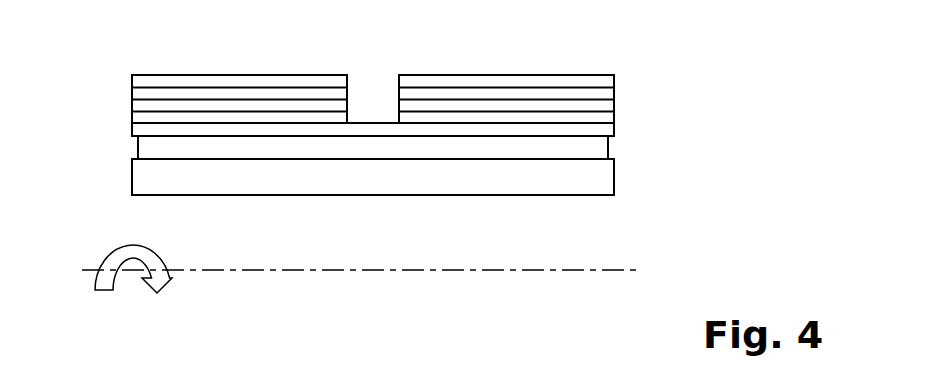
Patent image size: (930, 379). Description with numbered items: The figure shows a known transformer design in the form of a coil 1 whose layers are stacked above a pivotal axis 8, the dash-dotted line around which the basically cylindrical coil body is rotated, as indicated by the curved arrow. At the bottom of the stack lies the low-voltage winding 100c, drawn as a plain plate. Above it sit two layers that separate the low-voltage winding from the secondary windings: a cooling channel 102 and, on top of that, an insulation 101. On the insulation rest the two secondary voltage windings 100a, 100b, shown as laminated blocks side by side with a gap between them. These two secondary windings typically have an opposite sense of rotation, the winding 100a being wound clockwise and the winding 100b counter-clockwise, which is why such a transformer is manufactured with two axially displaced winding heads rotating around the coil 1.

The coil 1 is at (82, 75).
The secondary voltage winding 100a is at (438, 95).
The secondary voltage winding 100b is at (305, 94).
The low-voltage winding 100c is at (555, 178).
The insulation 101 is at (275, 130).
The cooling channel 102 is at (427, 150).
The pivotal axis 8 is at (585, 272).